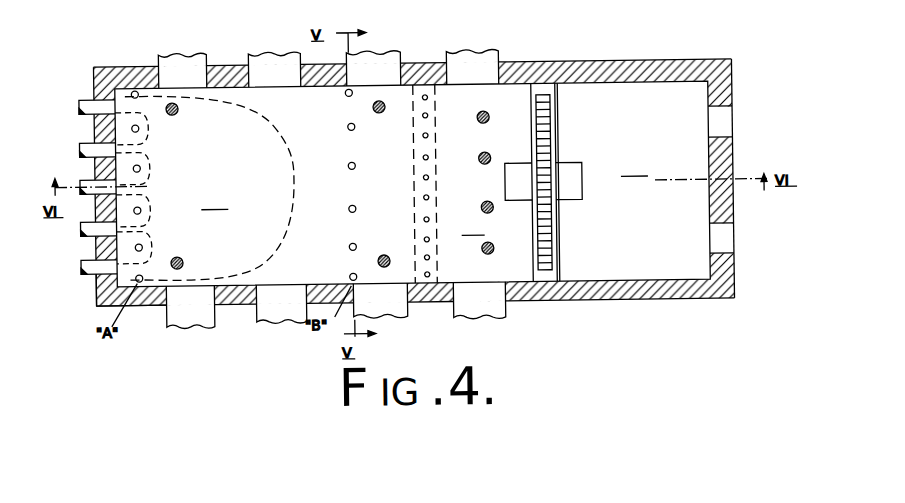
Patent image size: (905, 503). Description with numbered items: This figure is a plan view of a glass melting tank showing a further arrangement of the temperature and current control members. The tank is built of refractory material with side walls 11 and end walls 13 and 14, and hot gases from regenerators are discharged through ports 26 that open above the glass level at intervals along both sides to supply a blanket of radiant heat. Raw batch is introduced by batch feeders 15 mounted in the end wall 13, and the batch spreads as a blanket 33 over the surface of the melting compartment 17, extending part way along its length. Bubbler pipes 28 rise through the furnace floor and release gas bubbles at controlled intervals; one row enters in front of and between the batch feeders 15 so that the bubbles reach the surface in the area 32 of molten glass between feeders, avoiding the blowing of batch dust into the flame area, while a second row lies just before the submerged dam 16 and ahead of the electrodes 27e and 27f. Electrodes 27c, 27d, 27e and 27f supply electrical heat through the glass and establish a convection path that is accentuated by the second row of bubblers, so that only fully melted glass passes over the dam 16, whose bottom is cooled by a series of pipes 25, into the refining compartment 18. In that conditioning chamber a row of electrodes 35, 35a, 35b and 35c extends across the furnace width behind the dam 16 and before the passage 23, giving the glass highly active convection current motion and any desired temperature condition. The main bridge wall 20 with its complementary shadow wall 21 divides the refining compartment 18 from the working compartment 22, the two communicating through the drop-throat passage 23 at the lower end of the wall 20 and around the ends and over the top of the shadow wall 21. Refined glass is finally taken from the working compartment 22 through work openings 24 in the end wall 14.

The side walls 11 is at (590, 69).
The end wall 13 is at (98, 281).
The end wall 14 is at (727, 271).
The batch feeders 15 is at (80, 139).
The submerged dam 16 is at (413, 192).
The melting compartment 17 is at (214, 200).
The refining compartment 18 is at (472, 226).
The main bridge wall 20 is at (560, 131).
The shadow wall 21 is at (546, 114).
The working compartment 22 is at (634, 167).
The passage 23 is at (568, 178).
The work openings 24 is at (720, 122).
The pipes 25 is at (433, 132).
The ports 26 is at (206, 61).
The electrode 27c is at (178, 111).
The electrode 27d is at (182, 258).
The electrode 27e is at (389, 255).
The electrode 27f is at (376, 112).
The bubbler pipes 28 is at (141, 163).
The area 32 is at (142, 242).
The blanket 33 is at (292, 159).
The electrode 35 is at (488, 256).
The electrode 35a is at (481, 208).
The electrode 35b is at (479, 160).
The electrode 35c is at (491, 118).